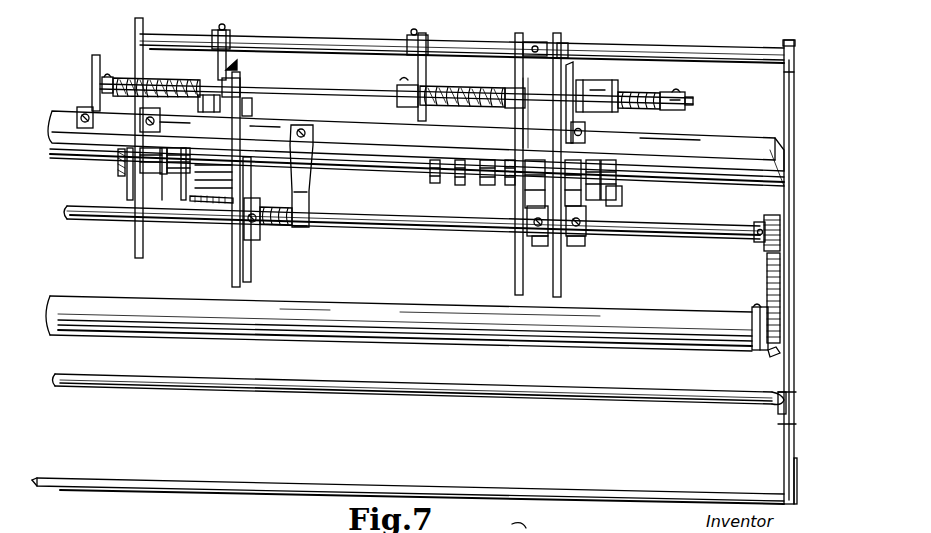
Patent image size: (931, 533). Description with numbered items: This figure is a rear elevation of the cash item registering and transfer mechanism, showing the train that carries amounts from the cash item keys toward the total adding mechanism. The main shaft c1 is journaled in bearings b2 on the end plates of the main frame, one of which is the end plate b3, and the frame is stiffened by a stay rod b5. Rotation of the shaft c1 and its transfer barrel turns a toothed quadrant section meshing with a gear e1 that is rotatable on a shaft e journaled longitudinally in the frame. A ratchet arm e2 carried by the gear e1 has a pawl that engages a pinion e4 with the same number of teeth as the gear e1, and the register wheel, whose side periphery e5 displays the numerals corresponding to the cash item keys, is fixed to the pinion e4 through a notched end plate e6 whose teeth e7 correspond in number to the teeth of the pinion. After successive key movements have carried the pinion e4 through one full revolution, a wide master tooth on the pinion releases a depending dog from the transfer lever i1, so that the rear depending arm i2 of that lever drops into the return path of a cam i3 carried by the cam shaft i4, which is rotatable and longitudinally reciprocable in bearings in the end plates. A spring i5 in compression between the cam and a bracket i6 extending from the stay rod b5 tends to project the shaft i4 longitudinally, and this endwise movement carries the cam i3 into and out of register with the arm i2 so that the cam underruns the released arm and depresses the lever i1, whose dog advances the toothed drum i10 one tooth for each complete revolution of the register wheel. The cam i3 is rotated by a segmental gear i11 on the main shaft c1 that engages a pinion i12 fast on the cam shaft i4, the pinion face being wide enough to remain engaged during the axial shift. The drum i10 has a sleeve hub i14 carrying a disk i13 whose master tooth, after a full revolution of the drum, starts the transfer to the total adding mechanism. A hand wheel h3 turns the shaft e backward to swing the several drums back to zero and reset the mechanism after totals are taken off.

The bearings b2 is at (770, 354).
The end plate b3 is at (782, 433).
The stay rod b5 is at (712, 140).
The shaft c1 is at (462, 340).
The shaft e is at (360, 160).
The gear e1 is at (142, 168).
The ratchet arm e2 is at (162, 174).
The pinion e4 is at (177, 170).
The side periphery of register wheel e5 is at (208, 95).
The notched end plate e6 is at (190, 95).
The teeth e7 is at (196, 182).
The hand wheel h3 is at (118, 160).
The transfer lever i1 is at (241, 74).
The rear depending arm i2 is at (233, 264).
The cam i3 is at (252, 262).
The cam shaft i4 is at (106, 220).
The spring i5 is at (285, 226).
The bracket i6 is at (308, 186).
The drum i10 is at (224, 204).
The segmental gear i11 is at (767, 271).
The pinion i12 is at (464, 96).
The disk i13 is at (434, 230).
The sleeve hub i14 is at (389, 162).